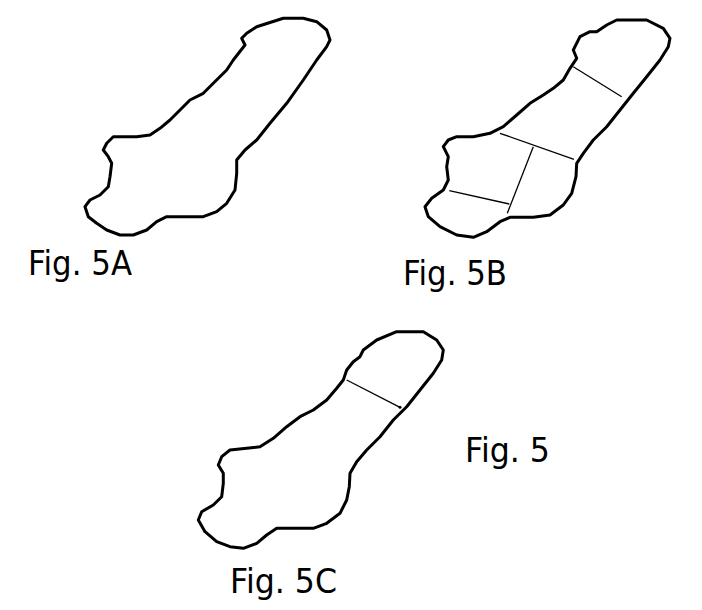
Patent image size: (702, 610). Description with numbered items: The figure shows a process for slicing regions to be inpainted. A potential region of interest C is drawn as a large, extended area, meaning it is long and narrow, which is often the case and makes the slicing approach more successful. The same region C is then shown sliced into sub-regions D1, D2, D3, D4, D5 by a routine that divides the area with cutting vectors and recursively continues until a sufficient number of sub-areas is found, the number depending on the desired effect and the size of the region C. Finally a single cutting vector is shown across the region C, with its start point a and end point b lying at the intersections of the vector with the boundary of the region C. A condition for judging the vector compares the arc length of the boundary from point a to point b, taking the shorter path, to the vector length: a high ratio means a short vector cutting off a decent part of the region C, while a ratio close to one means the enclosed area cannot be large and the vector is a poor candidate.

In FIG. 5A, the region of interest C is at (207, 126).
In FIG. 5B, the region of interest C is at (547, 128).
In FIG. 5B, the sub-region D1 is at (620, 58).
In FIG. 5B, the sub-region D2 is at (561, 113).
In FIG. 5B, the sub-region D3 is at (491, 173).
In FIG. 5B, the sub-region D4 is at (541, 182).
In FIG. 5B, the sub-region D5 is at (467, 214).
In FIG. 5C, the start point of cutting vector a is at (361, 383).
In FIG. 5C, the end point of cutting vector b is at (412, 417).